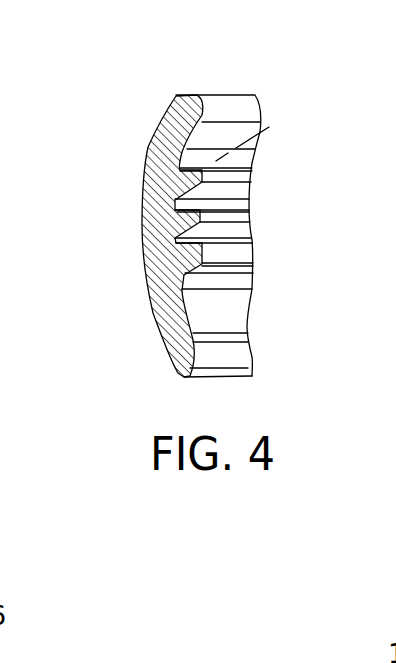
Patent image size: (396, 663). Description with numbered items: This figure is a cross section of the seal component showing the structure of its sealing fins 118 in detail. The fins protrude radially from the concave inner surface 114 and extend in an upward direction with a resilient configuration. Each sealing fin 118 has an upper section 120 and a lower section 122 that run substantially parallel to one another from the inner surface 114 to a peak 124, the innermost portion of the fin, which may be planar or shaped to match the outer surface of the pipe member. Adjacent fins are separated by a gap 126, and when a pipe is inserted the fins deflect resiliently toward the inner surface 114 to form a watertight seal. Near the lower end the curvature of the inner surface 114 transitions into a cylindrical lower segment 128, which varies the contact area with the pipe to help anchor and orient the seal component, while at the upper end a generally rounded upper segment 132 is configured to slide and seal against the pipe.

The inner surface 114 is at (203, 308).
The sealing fins 118 is at (265, 224).
The upper section 120 is at (178, 215).
The lower section 122 is at (228, 270).
The peak 124 is at (257, 249).
The gap 126 is at (176, 242).
The lower segment 128 is at (233, 350).
The upper segment 132 is at (198, 95).